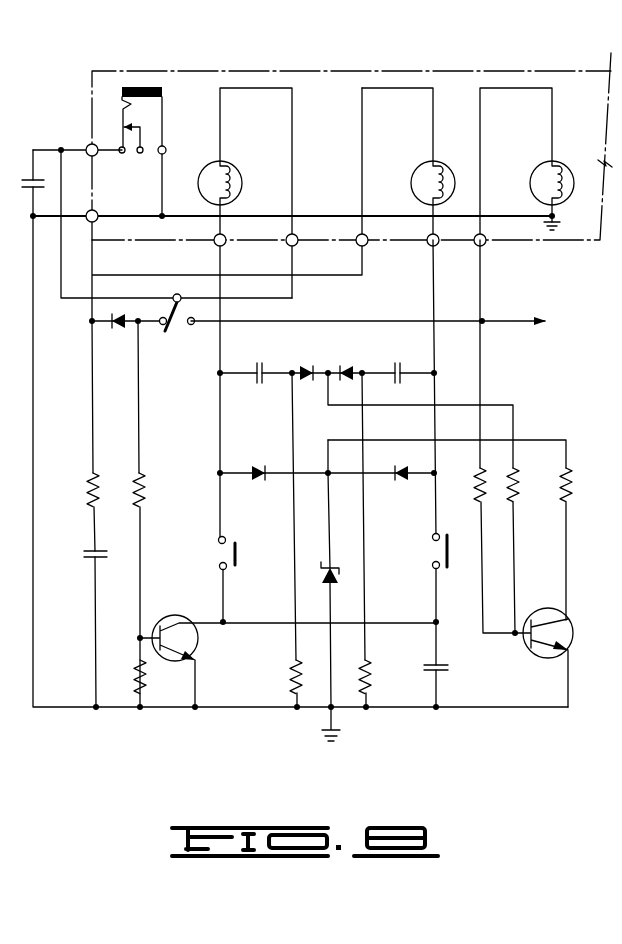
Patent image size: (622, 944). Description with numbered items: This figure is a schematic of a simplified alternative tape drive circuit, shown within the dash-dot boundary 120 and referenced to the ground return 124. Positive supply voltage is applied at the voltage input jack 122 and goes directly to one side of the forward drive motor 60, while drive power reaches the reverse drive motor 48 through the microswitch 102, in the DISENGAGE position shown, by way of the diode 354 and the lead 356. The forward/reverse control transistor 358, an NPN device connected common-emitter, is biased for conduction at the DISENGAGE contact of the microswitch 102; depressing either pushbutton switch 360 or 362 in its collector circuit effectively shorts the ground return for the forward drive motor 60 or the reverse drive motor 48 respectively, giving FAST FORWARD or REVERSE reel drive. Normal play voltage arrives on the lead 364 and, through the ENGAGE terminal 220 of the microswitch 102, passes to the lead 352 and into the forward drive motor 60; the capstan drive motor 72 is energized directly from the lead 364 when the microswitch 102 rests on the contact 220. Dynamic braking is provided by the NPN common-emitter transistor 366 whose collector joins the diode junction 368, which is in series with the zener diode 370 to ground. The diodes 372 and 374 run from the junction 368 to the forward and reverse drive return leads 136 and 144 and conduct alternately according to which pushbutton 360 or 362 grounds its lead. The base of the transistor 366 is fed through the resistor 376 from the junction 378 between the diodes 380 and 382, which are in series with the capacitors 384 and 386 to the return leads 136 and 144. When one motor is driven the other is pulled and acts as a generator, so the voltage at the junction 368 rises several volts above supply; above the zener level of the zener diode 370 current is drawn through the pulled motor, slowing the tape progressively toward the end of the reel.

The control module boundary 120 is at (414, 68).
The voltage input jack 122 is at (160, 105).
The forward drive motor 60 is at (241, 176).
The reverse drive motor 48 is at (453, 166).
The capstan drive motor 72 is at (572, 167).
The reverse drive return lead 144 is at (438, 271).
The lead 356 is at (325, 277).
The lead 364 is at (506, 300).
The lead 352 is at (71, 301).
The diode 354 is at (123, 327).
The microswitch 102 is at (178, 313).
The ENGAGE terminal 220 is at (174, 338).
The forward drive return lead 136 is at (220, 357).
The ground conductor 124 is at (43, 358).
The diode 380 is at (309, 368).
The capacitor 384 is at (252, 378).
The junction 378 is at (315, 366).
The diode 382 is at (342, 367).
The capacitor 386 is at (418, 346).
The diode 374 is at (258, 468).
The diode junction 368 is at (326, 476).
The diode 372 is at (409, 478).
The resistor 376 is at (520, 491).
The pushbutton switch 360 is at (238, 555).
The pushbutton switch 362 is at (437, 549).
The zener diode 370 is at (318, 566).
The forward/reverse control transistor 358 is at (192, 607).
The dynamic braking transistor 366 is at (561, 602).